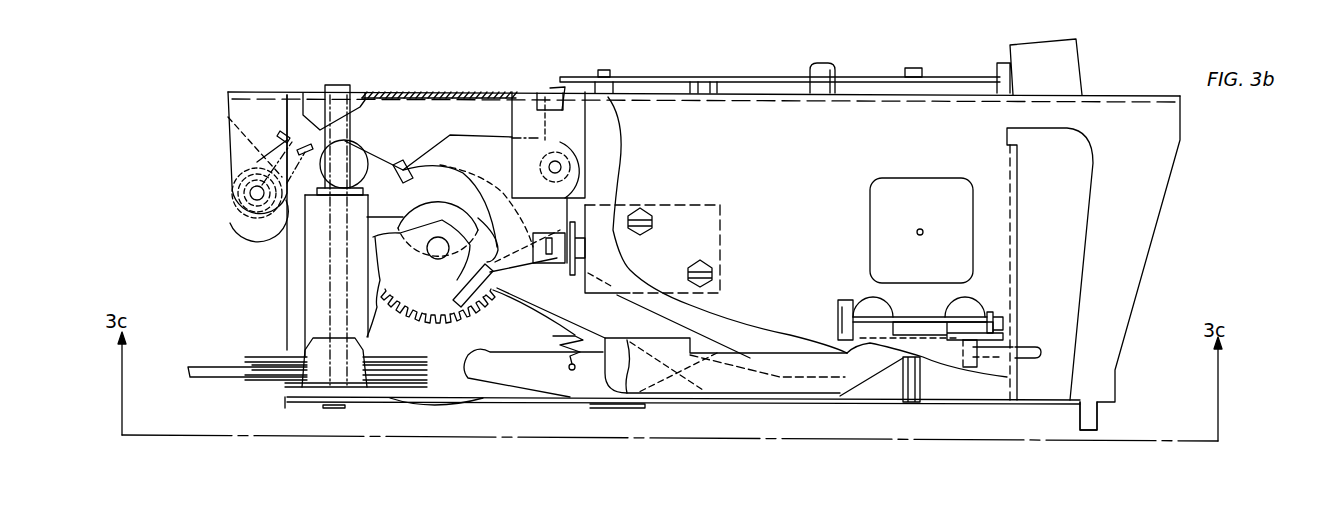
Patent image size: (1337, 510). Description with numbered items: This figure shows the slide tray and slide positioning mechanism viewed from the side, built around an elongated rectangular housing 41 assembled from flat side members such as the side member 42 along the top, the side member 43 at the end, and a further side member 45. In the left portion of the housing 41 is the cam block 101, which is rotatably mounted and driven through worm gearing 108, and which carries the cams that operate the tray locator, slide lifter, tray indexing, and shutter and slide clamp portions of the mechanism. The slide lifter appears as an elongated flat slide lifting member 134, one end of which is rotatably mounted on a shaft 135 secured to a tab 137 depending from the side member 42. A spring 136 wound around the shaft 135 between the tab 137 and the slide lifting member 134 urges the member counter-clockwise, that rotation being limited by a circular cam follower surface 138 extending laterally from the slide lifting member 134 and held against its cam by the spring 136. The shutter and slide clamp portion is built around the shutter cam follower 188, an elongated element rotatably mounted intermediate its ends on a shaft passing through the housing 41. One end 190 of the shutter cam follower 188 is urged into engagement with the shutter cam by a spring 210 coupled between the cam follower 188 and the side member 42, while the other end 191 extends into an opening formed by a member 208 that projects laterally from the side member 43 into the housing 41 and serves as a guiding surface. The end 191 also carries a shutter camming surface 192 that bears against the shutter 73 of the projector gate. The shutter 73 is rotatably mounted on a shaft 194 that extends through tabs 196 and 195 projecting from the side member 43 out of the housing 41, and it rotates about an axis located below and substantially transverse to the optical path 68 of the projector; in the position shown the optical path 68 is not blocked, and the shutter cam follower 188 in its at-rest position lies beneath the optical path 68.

The rectangular housing 41 is at (1170, 201).
The side member 42 is at (228, 93).
The side member 43 is at (990, 375).
The side member 45 is at (1108, 405).
The optical path 68 is at (921, 236).
The shutter 73 is at (838, 348).
The cam block 101 is at (487, 408).
The worm gearing 108 is at (305, 318).
The slide lifting member 134 is at (720, 350).
The shaft 135 is at (248, 193).
The spring 136 is at (253, 224).
The tab 137 is at (228, 128).
The cam follower surface 138 is at (370, 180).
The shutter cam follower 188 is at (855, 393).
The end of shutter cam follower 190 is at (490, 348).
The end of cam follower 191 is at (1058, 326).
The shutter camming surface 192 is at (997, 375).
The shaft 194 is at (934, 318).
The tab 195 is at (1000, 312).
The tab 196 is at (852, 300).
The member 208 is at (1005, 180).
The spring 210 is at (560, 334).